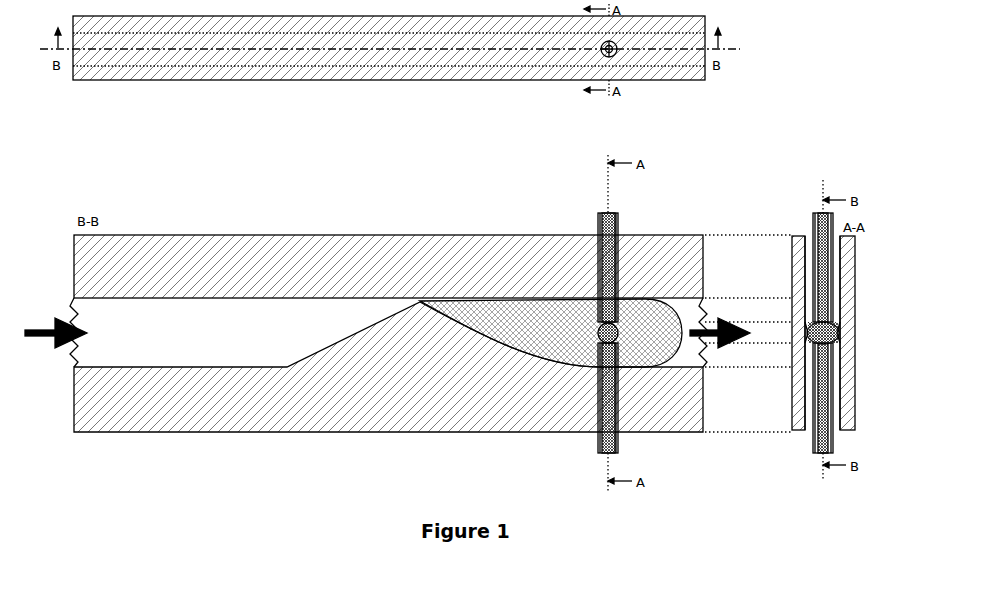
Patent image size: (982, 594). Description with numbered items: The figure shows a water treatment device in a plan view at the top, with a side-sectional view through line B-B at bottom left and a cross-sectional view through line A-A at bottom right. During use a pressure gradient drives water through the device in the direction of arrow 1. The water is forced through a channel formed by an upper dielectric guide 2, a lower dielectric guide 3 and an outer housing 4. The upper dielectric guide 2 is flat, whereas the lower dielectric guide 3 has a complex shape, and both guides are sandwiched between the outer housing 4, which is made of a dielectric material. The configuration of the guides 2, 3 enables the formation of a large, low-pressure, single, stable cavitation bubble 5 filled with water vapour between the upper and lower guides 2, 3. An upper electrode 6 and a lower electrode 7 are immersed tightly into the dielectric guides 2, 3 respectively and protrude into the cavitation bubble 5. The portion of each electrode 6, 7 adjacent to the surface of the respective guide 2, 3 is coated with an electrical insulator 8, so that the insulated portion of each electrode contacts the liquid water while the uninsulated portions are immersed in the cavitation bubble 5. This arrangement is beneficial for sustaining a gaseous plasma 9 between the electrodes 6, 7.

The arrow 1 is at (50, 325).
The upper dielectric guide 2 is at (220, 240).
The lower dielectric guide 3 is at (238, 406).
The outer housing 4 is at (841, 280).
The cavitation bubble 5 is at (473, 313).
The upper electrode 6 is at (604, 213).
The lower electrode 7 is at (603, 453).
The electrical insulator 8 is at (615, 213).
The gaseous plasma 9 is at (600, 325).